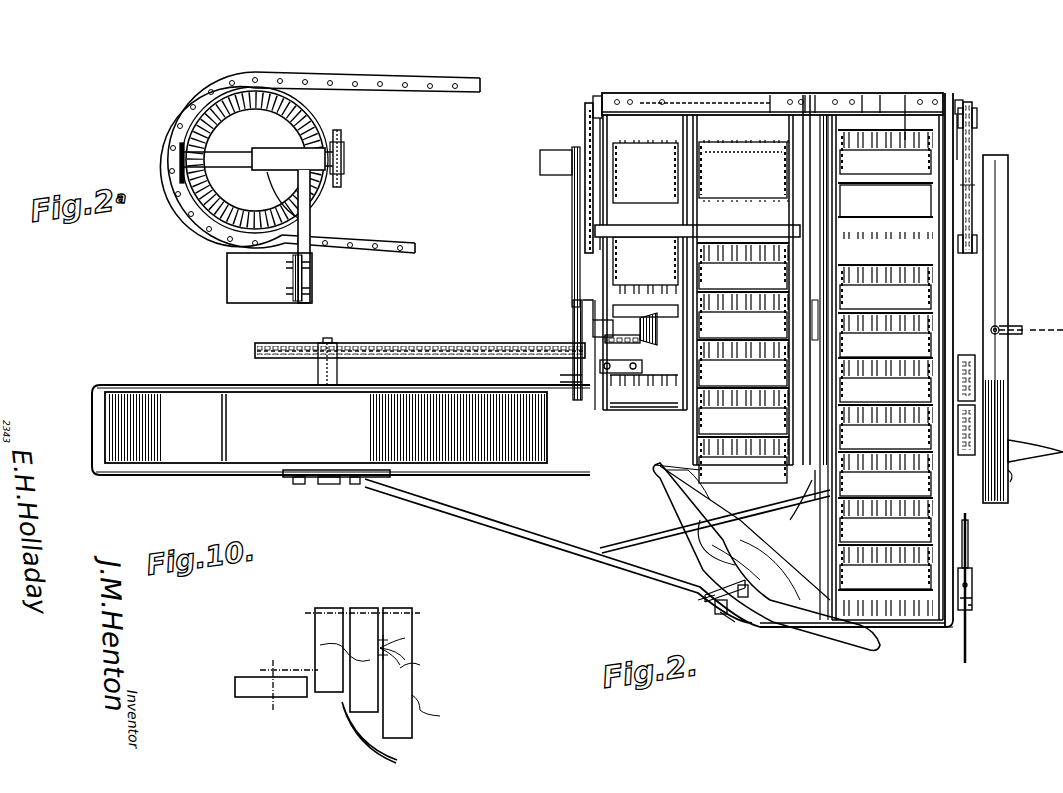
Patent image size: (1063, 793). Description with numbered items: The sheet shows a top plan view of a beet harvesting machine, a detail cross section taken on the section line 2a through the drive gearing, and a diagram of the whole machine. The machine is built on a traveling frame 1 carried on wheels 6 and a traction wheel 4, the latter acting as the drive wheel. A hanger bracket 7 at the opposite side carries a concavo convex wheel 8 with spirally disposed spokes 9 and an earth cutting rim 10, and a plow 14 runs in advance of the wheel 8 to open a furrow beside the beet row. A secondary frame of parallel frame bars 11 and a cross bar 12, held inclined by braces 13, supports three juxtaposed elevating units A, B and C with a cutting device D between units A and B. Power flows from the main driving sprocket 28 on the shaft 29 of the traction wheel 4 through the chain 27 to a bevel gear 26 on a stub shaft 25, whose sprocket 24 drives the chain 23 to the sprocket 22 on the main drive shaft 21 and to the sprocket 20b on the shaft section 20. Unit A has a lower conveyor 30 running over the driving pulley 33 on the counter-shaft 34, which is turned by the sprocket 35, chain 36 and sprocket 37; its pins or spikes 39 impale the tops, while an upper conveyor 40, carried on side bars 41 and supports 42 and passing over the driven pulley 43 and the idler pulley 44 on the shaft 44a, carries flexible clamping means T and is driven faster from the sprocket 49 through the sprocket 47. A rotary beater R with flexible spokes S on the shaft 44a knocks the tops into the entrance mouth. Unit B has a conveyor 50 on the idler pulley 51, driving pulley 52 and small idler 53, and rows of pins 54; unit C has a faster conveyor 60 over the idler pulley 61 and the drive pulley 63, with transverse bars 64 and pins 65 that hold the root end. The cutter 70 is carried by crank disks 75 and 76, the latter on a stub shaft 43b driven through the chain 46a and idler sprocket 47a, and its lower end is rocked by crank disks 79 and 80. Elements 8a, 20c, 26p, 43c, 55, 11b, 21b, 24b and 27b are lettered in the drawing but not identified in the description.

In FIG. 2, the traveling frame 1 is at (540, 525).
In FIG. 2, the section line 2a is at (716, 332).
In FIG. 2, the traction wheel 4 is at (341, 430).
In FIG. 10, the traction wheel 4 is at (255, 690).
In FIG. 2, the wheels 6 is at (540, 160).
In FIG. 2, the hanger bracket 7 is at (712, 612).
In FIG. 2, the concavo convex wheel 8 is at (668, 529).
In FIG. 10, the concavo convex wheel 8 is at (346, 738).
In FIG. 2, the chute bottom 8a is at (700, 598).
In FIG. 2, the spirally disposed spokes 9 is at (740, 512).
In FIG. 2, the earth cutting rim 10 is at (646, 475).
In FIG. 2, the parallel frame bars 11 is at (605, 155).
In FIG. 2, the cross bar 12 is at (773, 95).
In FIG. 2, the braces 13 is at (583, 112).
In FIG. 2, the plow 14 is at (1020, 445).
In FIG. 10, the plow 14 is at (442, 716).
In FIG. 2, the shaft section 20 is at (668, 175).
In FIG. 2, the sprocket 20b is at (583, 180).
In FIG. 2, the plate 20c is at (972, 145).
In FIG. 2, the main drive shaft 21 is at (960, 370).
In FIG. 2, the sprocket 22 is at (563, 380).
In FIG. 2, the chain 23 is at (600, 318).
In FIG. 2A, the sprocket 24 is at (345, 155).
In FIG. 2A, the stub shaft 25 is at (230, 160).
In FIG. 2, the bevel gear 26 is at (640, 322).
In FIG. 2A, the gear ring 26p is at (325, 112).
In FIG. 2A, the chain 27 is at (380, 76).
In FIG. 2, the main driving sprocket 28 is at (375, 345).
In FIG. 2, the traction wheel shaft 29 is at (325, 343).
In FIG. 2, the lower conveyor 30 is at (920, 100).
In FIG. 2, the driving pulley 33 is at (862, 98).
In FIG. 2, the counter-shaft 34 is at (802, 495).
In FIG. 2, the sprocket 35 is at (1012, 462).
In FIG. 2, the chain 36 is at (975, 405).
In FIG. 2, the sprocket 37 is at (975, 362).
In FIG. 2, the pins or spikes 39 is at (880, 98).
In FIG. 2, the upper conveyor 40 is at (885, 211).
In FIG. 2, the side bars 41 is at (780, 525).
In FIG. 2, the supports 42 is at (968, 100).
In FIG. 2, the pulley 43 is at (975, 200).
In FIG. 2, the stub shaft 43b is at (740, 232).
In FIG. 2, the rod 43c is at (920, 243).
In FIG. 2, the idler pulley 44 is at (940, 630).
In FIG. 2, the shaft 44a is at (972, 584).
In FIG. 2, the chain 46a is at (600, 198).
In FIG. 2, the sprocket 47 is at (975, 108).
In FIG. 2, the idler sprocket 47a is at (593, 104).
In FIG. 2, the sprocket 49 is at (985, 170).
In FIG. 2, the conveyor 50 is at (743, 266).
In FIG. 2, the idler pulley 51 is at (700, 118).
In FIG. 2, the driving pulley 52 is at (660, 492).
In FIG. 2, the idler 53 is at (690, 430).
In FIG. 2, the rows of pins 54 is at (728, 400).
In FIG. 2, the plate 55 is at (775, 403).
In FIG. 2, the conveyor 60 is at (645, 261).
In FIG. 2, the idler pulley 61 is at (583, 210).
In FIG. 2, the drive pulley 63 is at (612, 400).
In FIG. 2, the transverse bars 64 is at (655, 405).
In FIG. 2, the pins or spikes 65 is at (743, 173).
In FIG. 2, the cutter 70 is at (812, 318).
In FIG. 2, the crank disk 75 is at (812, 255).
In FIG. 2, the crank disk 76 is at (842, 263).
In FIG. 2, the crank disk 79 is at (805, 95).
In FIG. 2, the crank disk 80 is at (815, 98).
In FIG. 2, the elevating unit A is at (870, 140).
In FIG. 10, the elevating unit A is at (405, 675).
In FIG. 2, the elevating unit B is at (735, 140).
In FIG. 10, the elevating unit B is at (360, 625).
In FIG. 2, the elevating unit C is at (672, 140).
In FIG. 10, the elevating unit C is at (320, 625).
In FIG. 2, the cutting device D is at (808, 140).
In FIG. 10, the cutting device D is at (389, 608).
In FIG. 2, the rotary beater R is at (979, 544).
In FIG. 2, the flexible arms or spokes S is at (968, 540).
In FIG. 2, the flexible clamping means T is at (898, 520).
In FIG. 2, the post 11b is at (975, 120).
In FIG. 2, the shaft 21b is at (813, 370).
In FIG. 2, the sprocket 24b is at (620, 338).
In FIG. 2, the chain 27b is at (445, 352).